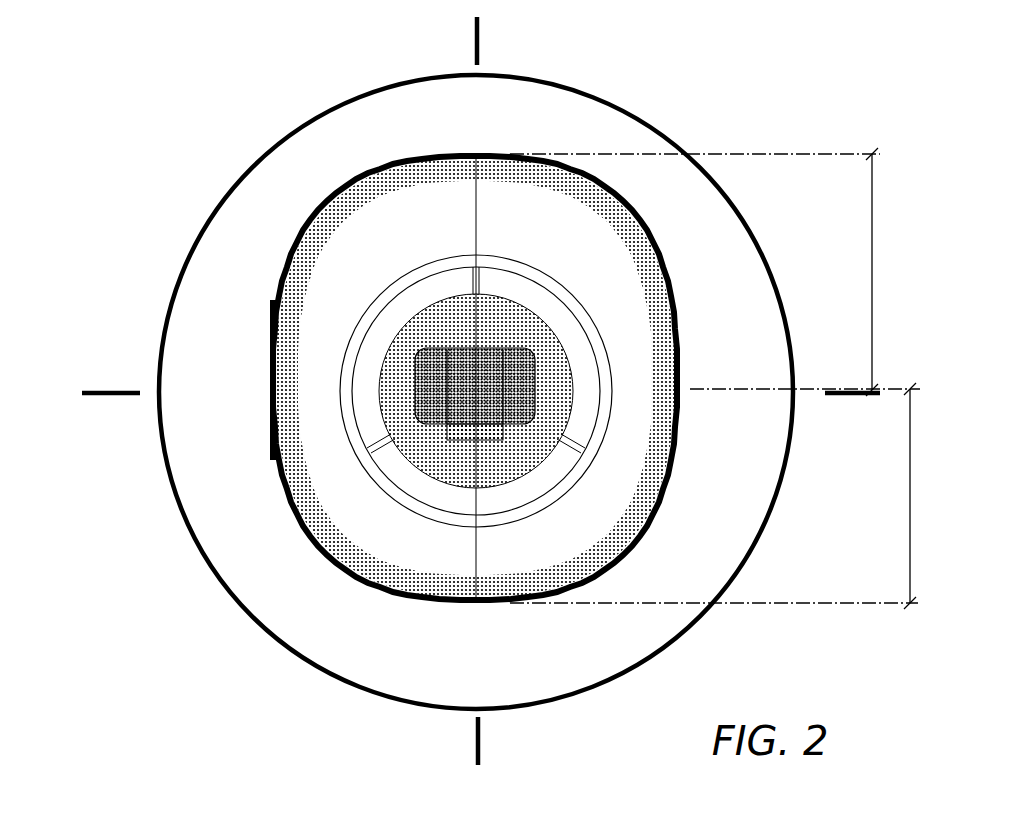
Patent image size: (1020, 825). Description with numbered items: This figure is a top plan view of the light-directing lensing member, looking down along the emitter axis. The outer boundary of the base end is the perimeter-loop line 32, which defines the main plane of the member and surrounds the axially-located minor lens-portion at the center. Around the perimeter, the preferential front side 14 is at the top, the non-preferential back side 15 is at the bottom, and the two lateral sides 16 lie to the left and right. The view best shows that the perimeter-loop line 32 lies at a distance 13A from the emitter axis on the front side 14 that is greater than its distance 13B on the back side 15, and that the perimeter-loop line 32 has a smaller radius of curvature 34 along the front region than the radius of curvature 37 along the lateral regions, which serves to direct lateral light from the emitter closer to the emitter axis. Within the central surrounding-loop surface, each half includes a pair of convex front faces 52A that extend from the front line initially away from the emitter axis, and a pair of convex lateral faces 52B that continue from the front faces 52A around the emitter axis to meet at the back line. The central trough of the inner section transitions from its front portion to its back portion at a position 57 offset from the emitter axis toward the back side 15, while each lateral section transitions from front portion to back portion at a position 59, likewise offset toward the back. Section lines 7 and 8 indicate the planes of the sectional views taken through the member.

The section line 7- 7 is at (470, 48).
The section line 8- 8 is at (125, 384).
The distance 13A is at (873, 292).
The distance 13B is at (908, 537).
The preferential front side 14 is at (458, 131).
The non-preferential back side 15 is at (465, 662).
The lateral sides 16 is at (208, 428).
The perimeter-loop line 32 is at (680, 330).
The radius of curvature 34 is at (462, 352).
The radius of curvature 37 is at (340, 434).
The front faces 52A is at (405, 238).
The lateral faces 52B is at (413, 387).
The position 57 is at (487, 422).
The position 59 is at (440, 420).